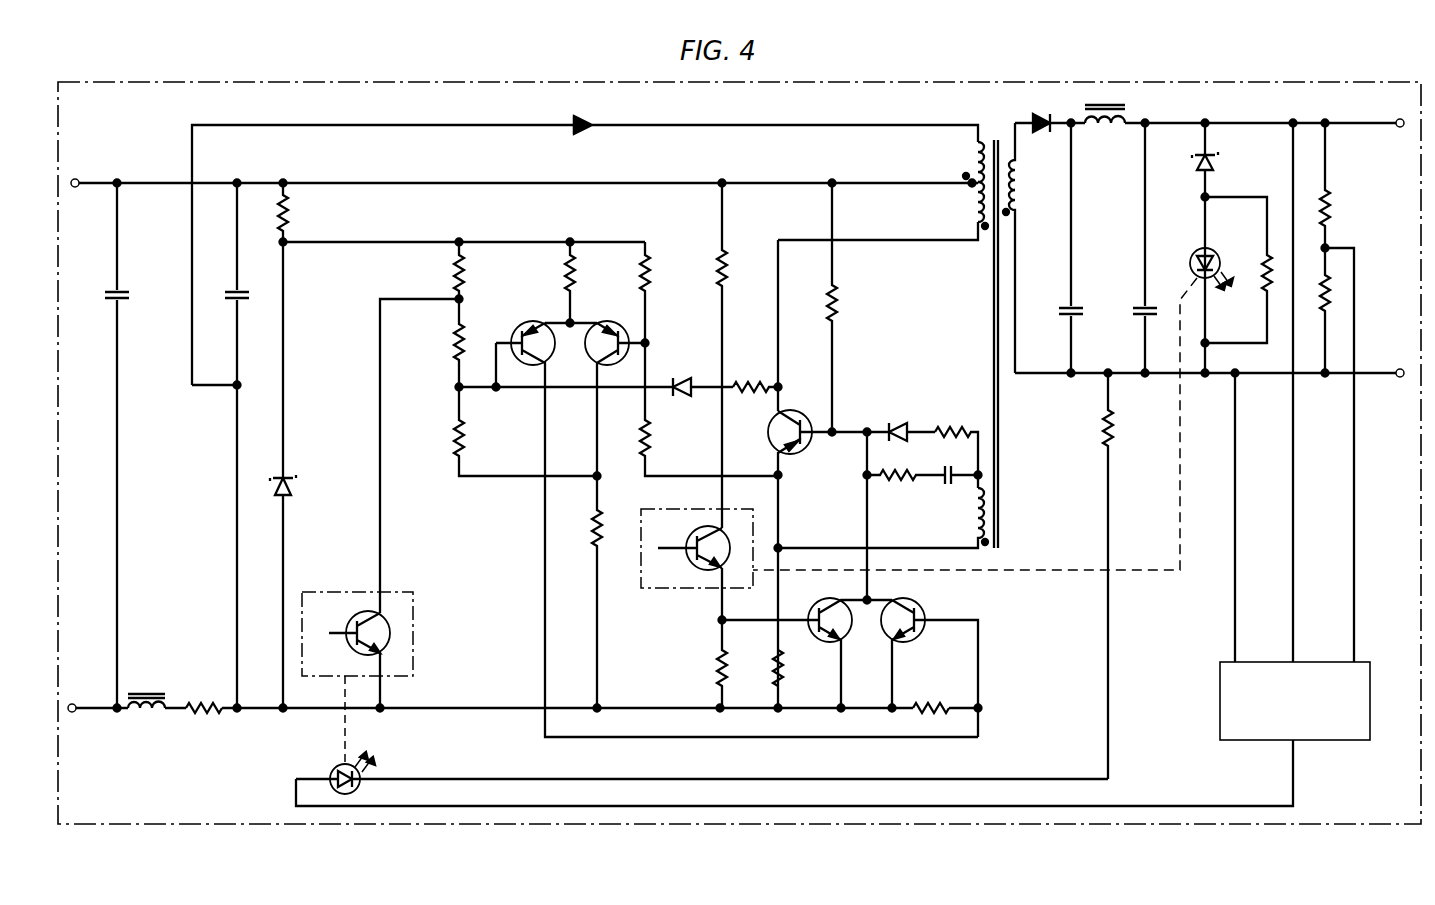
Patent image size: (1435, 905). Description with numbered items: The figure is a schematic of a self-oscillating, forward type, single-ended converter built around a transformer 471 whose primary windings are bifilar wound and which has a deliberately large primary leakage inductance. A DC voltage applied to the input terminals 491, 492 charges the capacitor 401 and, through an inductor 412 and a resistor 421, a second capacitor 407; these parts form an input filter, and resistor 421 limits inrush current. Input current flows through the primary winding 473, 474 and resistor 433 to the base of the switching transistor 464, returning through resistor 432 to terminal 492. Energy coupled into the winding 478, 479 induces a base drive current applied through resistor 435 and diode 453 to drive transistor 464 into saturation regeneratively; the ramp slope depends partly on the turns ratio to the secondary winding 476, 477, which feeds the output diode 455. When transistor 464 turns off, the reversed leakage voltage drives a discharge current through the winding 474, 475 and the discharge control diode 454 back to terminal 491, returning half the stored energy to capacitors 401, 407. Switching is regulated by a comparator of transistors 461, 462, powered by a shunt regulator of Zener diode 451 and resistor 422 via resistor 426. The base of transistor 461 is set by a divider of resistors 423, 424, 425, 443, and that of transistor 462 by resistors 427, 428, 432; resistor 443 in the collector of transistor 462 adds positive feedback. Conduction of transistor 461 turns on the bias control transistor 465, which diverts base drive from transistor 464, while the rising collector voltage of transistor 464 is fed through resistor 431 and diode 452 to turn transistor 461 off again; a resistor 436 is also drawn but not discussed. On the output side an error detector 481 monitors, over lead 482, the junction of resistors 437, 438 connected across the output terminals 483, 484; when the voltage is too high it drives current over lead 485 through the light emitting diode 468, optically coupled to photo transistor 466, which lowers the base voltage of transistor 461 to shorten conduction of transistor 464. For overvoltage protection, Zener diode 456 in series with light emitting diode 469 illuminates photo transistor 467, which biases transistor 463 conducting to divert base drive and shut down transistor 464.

The capacitor 401 is at (131, 445).
The second capacitor 407 is at (252, 445).
The inductor 412 is at (147, 689).
The resistor 421 is at (203, 720).
The resistor 422 is at (461, 214).
The resistor 423 is at (422, 427).
The resistor 424 is at (438, 345).
The resistor 425 is at (527, 433).
The resistor 426 is at (559, 284).
The resistor 427 is at (627, 314).
The resistor 428 is at (709, 431).
The resistor 431 is at (757, 374).
The resistor 432 is at (799, 668).
The resistor 433 is at (854, 307).
The resistor 435 is at (958, 445).
The resistor 436 is at (929, 695).
The resistor 437 is at (1347, 187).
The resistor 438 is at (1332, 286).
The resistor 443 is at (575, 592).
The Zener diode 451 is at (301, 475).
The diode 452 is at (596, 376).
The diode 453 is at (883, 421).
The discharge control diode 454 is at (585, 242).
The output diode 455 is at (1050, 111).
The Zener diode 456 is at (1221, 160).
The transistor 461 is at (737, 519).
The transistor 462 is at (615, 398).
The transistor 463 is at (807, 645).
The switching transistor 464 is at (802, 559).
The bias control transistor 465 is at (929, 662).
The photo transistor 466 is at (413, 633).
The photo transistor 467 is at (669, 590).
The light emitting diode 468 is at (702, 735).
The light emitting diode 469 is at (1012, 382).
The transformer 471 is at (1012, 133).
The primary winding end 473 is at (883, 313).
The primary winding tap 474 is at (957, 201).
The primary winding end 475 is at (960, 155).
The secondary winding end 476 is at (1034, 156).
The secondary winding end 477 is at (1031, 281).
The feedback winding end 478 is at (883, 519).
The feedback winding end 479 is at (958, 483).
The error detector circuit 481 is at (1220, 708).
The monitoring lead 482 is at (1315, 392).
The output terminal 483 is at (1241, 111).
The output terminal 484 is at (1214, 362).
The lead 485 is at (794, 773).
The input terminal 491 is at (518, 173).
The input terminal 492 is at (520, 697).